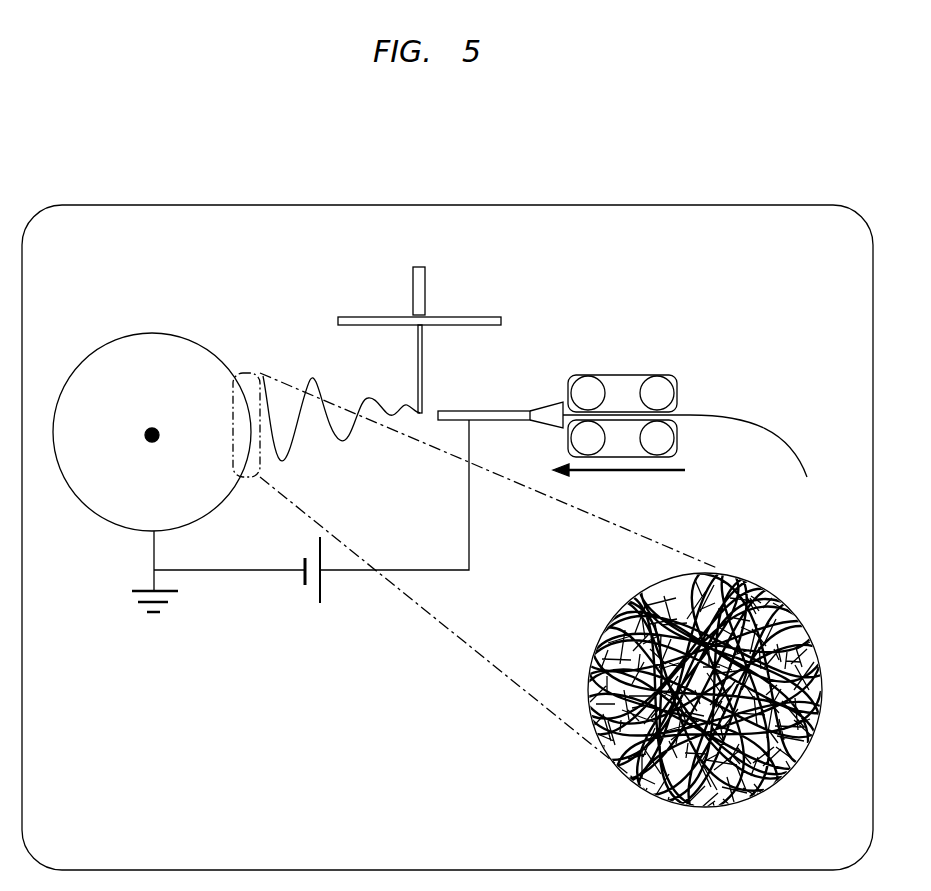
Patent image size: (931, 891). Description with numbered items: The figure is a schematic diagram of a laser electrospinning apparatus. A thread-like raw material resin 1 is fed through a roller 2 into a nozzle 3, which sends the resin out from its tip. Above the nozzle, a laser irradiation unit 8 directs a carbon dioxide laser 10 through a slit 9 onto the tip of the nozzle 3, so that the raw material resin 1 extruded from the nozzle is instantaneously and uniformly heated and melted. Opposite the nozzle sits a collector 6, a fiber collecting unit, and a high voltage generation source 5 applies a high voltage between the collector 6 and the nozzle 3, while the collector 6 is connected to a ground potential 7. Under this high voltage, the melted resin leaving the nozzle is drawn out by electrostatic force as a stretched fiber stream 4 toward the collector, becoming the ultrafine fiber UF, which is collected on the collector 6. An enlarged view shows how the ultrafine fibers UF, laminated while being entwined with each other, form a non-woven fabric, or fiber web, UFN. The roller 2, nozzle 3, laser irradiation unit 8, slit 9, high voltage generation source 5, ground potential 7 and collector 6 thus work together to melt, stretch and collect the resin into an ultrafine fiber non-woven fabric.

The thread-like resin 1 is at (790, 442).
The roller 2 is at (677, 388).
The nozzle 3 is at (549, 402).
The spun ultrafine fiber stream 4 is at (310, 378).
The high voltage generation source 5 is at (313, 597).
The collector 6 is at (150, 332).
The ground potential 7 is at (142, 589).
The laser irradiation unit 8 is at (427, 292).
The slit 9 is at (477, 316).
The laser 10 is at (422, 357).
The ultrafine fiber UF is at (780, 606).
The non-woven fabric UFN is at (795, 794).